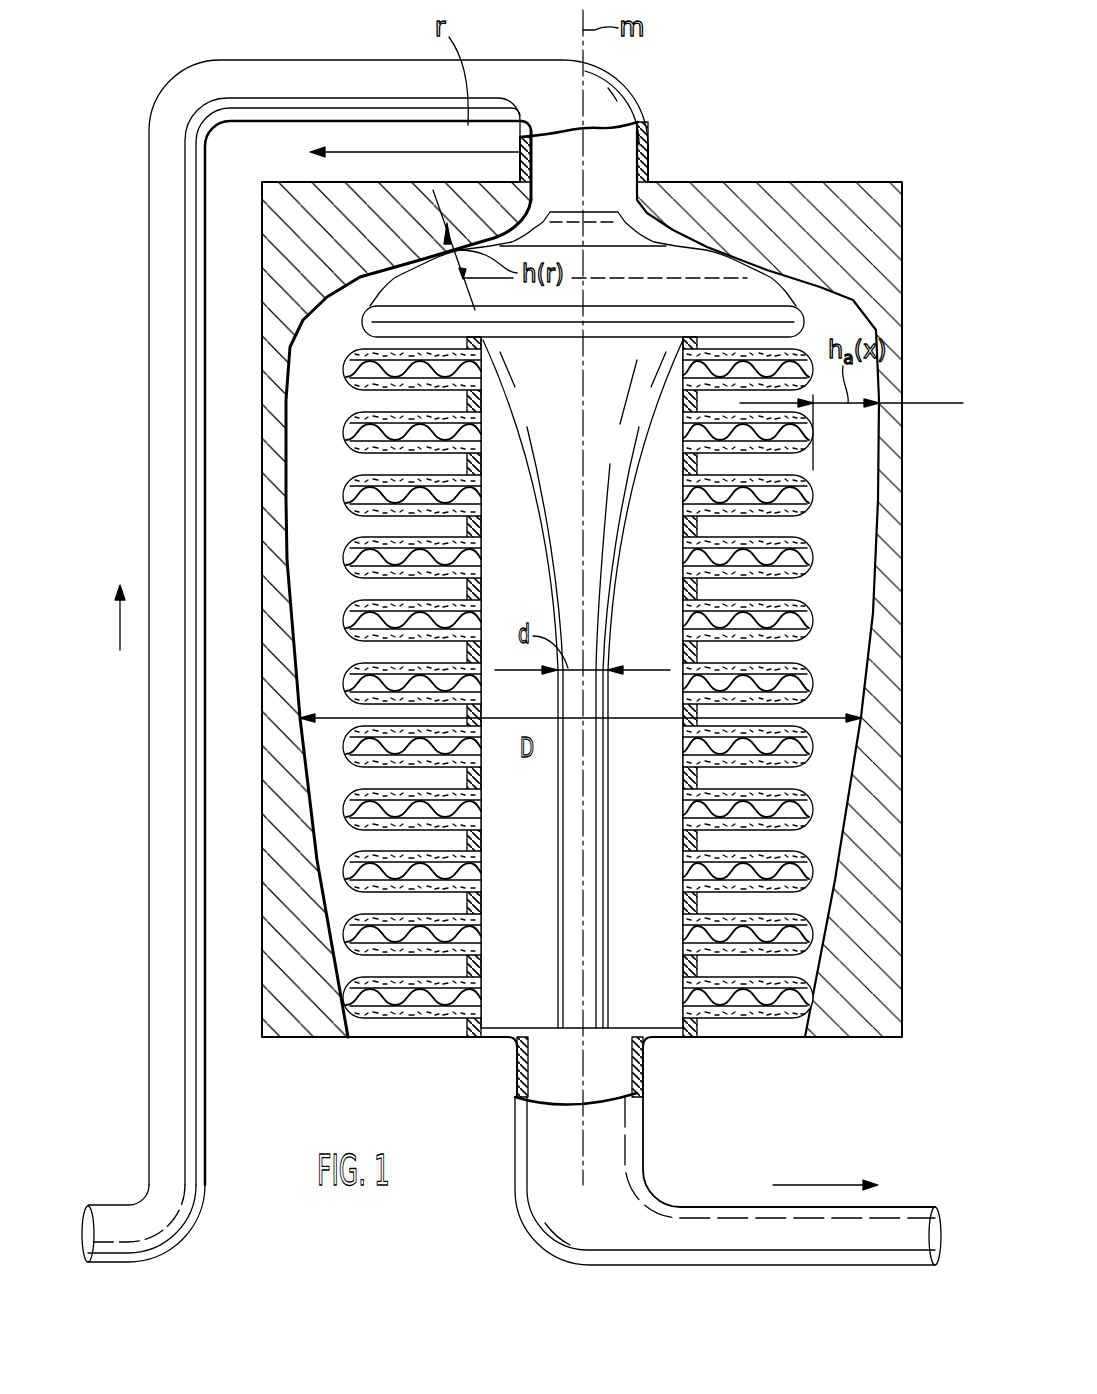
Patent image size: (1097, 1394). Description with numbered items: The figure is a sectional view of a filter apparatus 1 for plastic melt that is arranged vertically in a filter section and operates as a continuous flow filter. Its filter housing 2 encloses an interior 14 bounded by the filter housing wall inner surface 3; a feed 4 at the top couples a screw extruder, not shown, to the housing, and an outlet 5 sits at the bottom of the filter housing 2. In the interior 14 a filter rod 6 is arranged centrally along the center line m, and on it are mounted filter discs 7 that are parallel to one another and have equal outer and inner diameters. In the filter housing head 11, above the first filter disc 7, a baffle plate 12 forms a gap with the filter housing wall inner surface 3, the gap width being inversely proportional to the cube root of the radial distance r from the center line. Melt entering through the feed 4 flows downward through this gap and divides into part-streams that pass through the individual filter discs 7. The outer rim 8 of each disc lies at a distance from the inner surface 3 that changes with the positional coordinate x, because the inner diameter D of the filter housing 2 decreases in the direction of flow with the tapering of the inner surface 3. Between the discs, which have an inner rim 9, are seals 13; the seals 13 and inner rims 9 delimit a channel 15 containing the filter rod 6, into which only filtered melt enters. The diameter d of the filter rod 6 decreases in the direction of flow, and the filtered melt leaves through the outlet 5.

The filter apparatus 1 is at (526, 662).
The filter housing 2 is at (882, 958).
The filter housing wall inner surface 3 is at (290, 556).
The feed 4 is at (155, 793).
The outlet 5 is at (716, 1217).
The filter rod 6 is at (608, 568).
The filter discs 7 is at (352, 372).
The outer rim 8 is at (818, 624).
The inner rim 9 is at (683, 940).
The filter housing head 11 is at (888, 238).
The baffle plate 12 is at (695, 262).
The seals 13 is at (478, 853).
The interior 14 is at (880, 530).
The channel 15 is at (655, 1003).